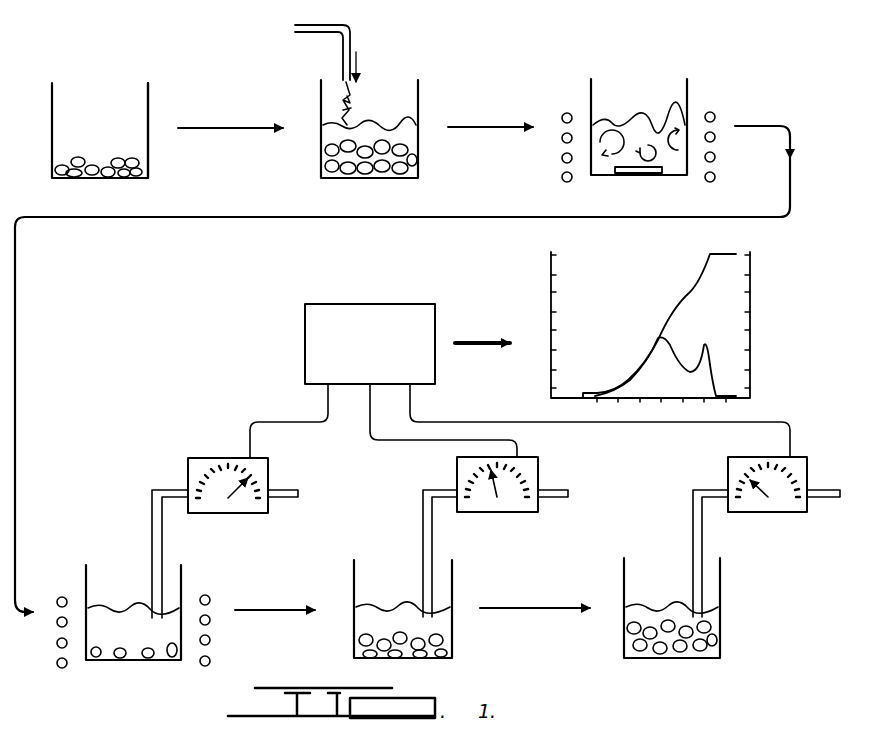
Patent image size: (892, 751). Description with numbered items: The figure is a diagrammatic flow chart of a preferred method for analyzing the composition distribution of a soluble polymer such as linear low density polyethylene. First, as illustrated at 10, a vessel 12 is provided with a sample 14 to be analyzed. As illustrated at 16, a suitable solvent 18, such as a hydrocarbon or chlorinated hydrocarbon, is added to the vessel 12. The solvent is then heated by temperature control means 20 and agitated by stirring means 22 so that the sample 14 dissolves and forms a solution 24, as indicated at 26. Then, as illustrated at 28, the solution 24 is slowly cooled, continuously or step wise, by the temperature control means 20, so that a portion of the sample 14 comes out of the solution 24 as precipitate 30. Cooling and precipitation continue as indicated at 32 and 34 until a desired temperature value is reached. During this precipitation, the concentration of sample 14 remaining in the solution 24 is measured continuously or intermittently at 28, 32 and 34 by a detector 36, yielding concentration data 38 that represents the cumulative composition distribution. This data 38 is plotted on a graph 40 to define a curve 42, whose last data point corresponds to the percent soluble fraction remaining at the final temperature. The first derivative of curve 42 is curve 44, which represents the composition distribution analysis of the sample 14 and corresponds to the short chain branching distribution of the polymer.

The first step 10 is at (74, 72).
The vessel 12 is at (148, 95).
The sample 14 is at (98, 155).
The solvent addition step 16 is at (408, 72).
The solvent 18 is at (370, 136).
The temperature control means 20 is at (714, 115).
The stirring means 22 is at (640, 175).
The solution 24 is at (636, 130).
The dissolution step 26 is at (611, 72).
The first cooling and precipitation step 28 is at (98, 560).
The precipitate 30 is at (96, 662).
The second cooling and precipitation step 32 is at (391, 553).
The third cooling and precipitation step 34 is at (638, 552).
The detector 36 is at (268, 465).
The concentration data 38 is at (305, 318).
The graph 40 is at (650, 327).
The curve 42 is at (686, 290).
The derivative curve 44 is at (683, 350).